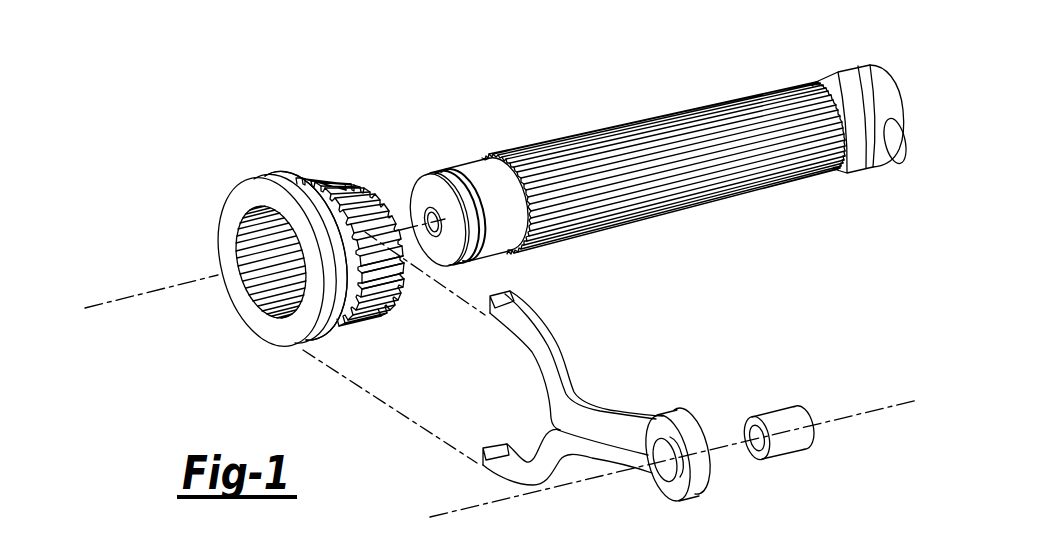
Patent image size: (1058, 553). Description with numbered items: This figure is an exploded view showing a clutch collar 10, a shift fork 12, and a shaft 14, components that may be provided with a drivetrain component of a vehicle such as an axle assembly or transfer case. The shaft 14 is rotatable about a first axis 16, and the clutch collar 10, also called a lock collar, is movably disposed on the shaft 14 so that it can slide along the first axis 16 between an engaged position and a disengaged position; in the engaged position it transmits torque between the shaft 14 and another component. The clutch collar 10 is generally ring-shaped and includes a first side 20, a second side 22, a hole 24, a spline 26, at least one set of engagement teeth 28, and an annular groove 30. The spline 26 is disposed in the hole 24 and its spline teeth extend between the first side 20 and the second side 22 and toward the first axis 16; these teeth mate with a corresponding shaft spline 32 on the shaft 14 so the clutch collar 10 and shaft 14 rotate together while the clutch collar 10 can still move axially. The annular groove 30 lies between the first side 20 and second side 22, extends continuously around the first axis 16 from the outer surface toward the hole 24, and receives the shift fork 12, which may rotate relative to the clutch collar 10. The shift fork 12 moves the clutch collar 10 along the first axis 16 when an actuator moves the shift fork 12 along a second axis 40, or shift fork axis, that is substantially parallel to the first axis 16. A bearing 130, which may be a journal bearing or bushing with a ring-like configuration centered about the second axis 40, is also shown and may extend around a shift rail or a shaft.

The clutch collar 10 is at (298, 166).
The shift fork 12 is at (572, 375).
The shaft 14 is at (828, 86).
The first axis 16 is at (117, 298).
The first side 20 is at (287, 337).
The second side 22 is at (378, 293).
The hole 24 is at (240, 293).
The spline 26 is at (258, 257).
The engagement teeth 28 is at (352, 178).
The annular groove 30 is at (340, 292).
The shaft spline 32 is at (637, 122).
The second axis 40 is at (905, 402).
The bearing 130 is at (775, 412).